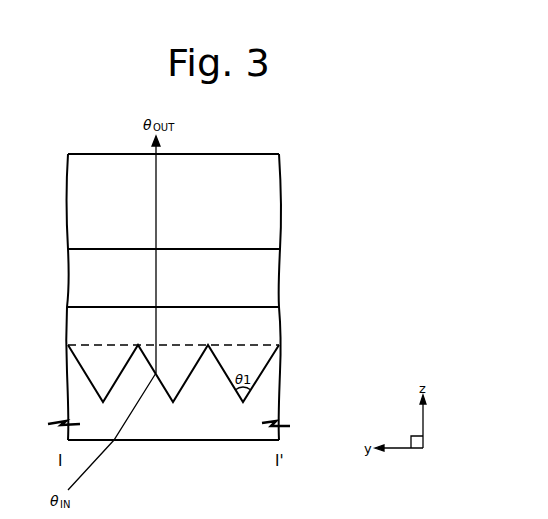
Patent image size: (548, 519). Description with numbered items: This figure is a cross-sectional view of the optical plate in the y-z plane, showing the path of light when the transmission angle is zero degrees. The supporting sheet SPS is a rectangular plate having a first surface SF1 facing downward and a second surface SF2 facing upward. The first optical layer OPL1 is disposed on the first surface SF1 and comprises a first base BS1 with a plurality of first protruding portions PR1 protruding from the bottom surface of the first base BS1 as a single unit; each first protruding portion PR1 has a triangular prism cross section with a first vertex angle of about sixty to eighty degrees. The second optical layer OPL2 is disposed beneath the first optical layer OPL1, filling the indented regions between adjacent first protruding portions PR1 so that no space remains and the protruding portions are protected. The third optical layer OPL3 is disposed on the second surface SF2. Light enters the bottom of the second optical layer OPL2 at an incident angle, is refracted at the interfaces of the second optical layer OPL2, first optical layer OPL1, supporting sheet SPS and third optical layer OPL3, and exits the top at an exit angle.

The third optical layer OPL3 is at (271, 203).
The second surface SF2 is at (245, 249).
The supporting sheet SPS is at (271, 278).
The first surface SF1 is at (245, 307).
The first optical layer OPL1 is at (224, 354).
The first base BS1 is at (273, 335).
The first protruding portions PR1 is at (253, 360).
The second optical layer OPL2 is at (273, 403).